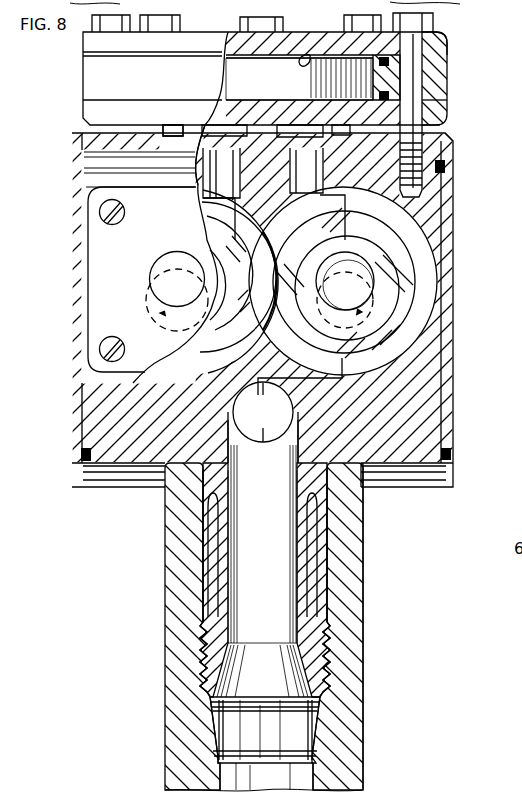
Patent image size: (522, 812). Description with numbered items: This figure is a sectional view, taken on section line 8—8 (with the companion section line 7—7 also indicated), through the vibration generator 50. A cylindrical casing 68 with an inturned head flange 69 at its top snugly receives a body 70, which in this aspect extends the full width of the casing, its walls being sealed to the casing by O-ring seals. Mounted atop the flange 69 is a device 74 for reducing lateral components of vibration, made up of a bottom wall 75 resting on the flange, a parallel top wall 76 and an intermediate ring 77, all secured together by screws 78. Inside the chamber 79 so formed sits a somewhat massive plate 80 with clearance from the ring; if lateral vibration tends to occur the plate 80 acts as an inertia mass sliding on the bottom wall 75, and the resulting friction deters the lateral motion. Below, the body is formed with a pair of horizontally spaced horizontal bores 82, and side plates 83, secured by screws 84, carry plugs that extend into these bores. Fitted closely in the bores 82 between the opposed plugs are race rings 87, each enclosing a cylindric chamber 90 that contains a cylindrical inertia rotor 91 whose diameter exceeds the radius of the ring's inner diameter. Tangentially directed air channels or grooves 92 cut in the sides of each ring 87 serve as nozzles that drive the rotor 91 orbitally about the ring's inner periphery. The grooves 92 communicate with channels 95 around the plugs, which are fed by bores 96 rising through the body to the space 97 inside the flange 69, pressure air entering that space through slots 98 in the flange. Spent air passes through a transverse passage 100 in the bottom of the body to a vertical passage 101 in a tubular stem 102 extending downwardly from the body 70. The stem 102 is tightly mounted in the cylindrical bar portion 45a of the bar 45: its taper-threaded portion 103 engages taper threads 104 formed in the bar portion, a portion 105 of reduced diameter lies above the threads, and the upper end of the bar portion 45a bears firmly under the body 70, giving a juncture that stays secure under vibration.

The section line 8— 8 is at (260, 15).
The section line 7— 7 is at (291, 141).
The bar 45 is at (372, 672).
The cylindrical bar portion 45a is at (358, 582).
The vibration generator 50 is at (455, 225).
The cylindrical casing 68 is at (372, 310).
The inturned head flange 69 is at (446, 147).
The body 70 is at (441, 417).
The device for reducing lateral components of vibration 74 is at (453, 69).
The bottom wall 75 is at (443, 118).
The top wall 76 is at (443, 45).
The intermediate ring 77 is at (439, 110).
The screws 78 is at (419, 87).
The chamber 79 is at (310, 56).
The plate 80 is at (233, 78).
The horizontal bores 82 is at (188, 340).
The side plates 83 is at (98, 243).
The screws 84 is at (100, 207).
The race rings 87 is at (208, 222).
The cylindric chamber 90 is at (206, 246).
The cylindrical inertia rotor 91 is at (163, 283).
The air channels or grooves 92 is at (296, 233).
The channels 95 is at (331, 211).
The bores 96 is at (321, 185).
The space 97 is at (237, 139).
The slots 98 is at (87, 128).
The transverse passage 100 is at (281, 416).
The vertical passage 101 is at (232, 547).
The tubular stem 102 is at (217, 588).
The taper-threaded portion 103 is at (213, 663).
The taper threads 104 is at (207, 681).
The portion of reduced diameter 105 is at (304, 527).